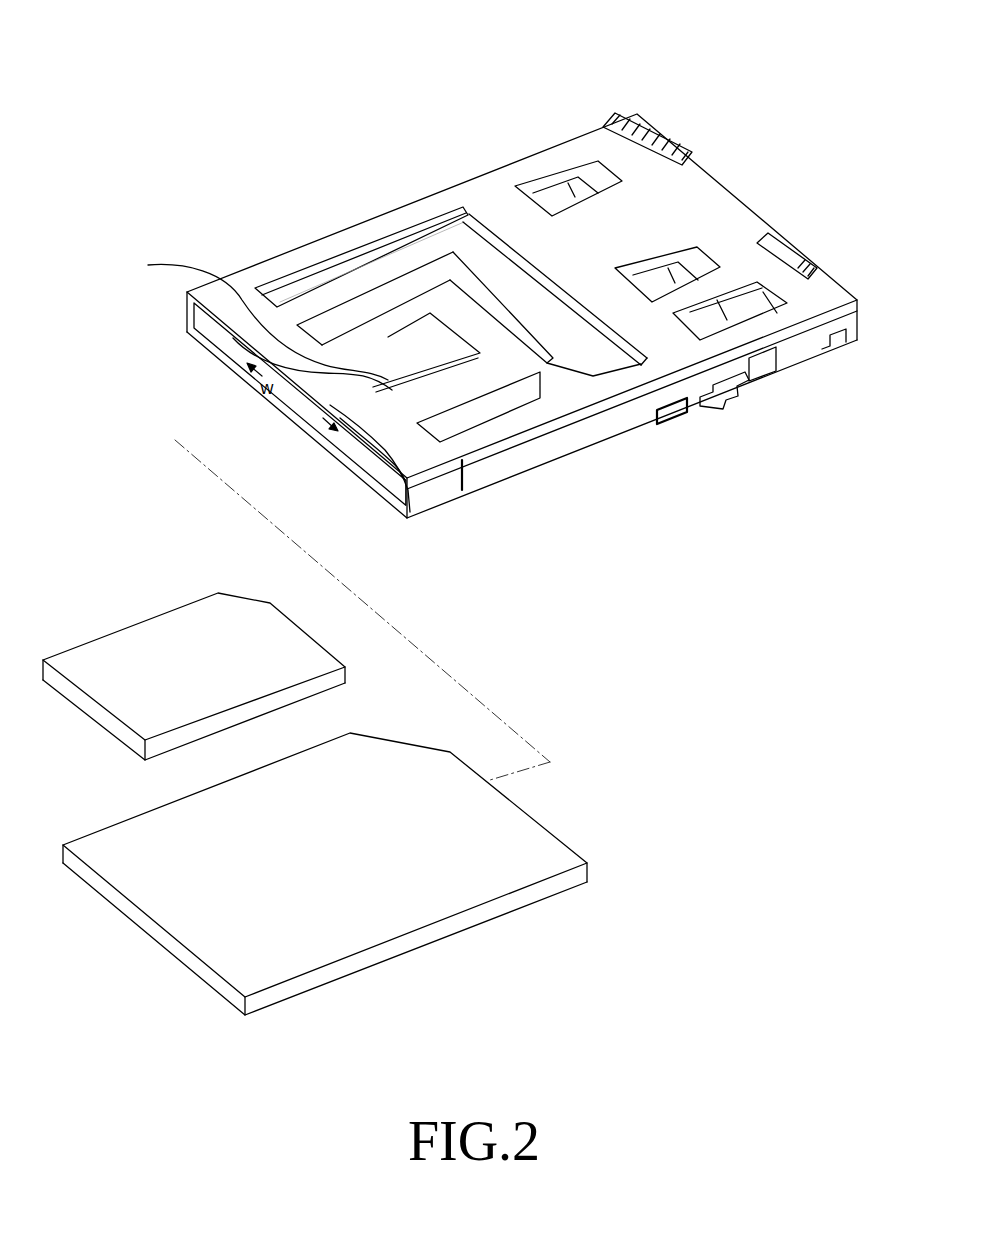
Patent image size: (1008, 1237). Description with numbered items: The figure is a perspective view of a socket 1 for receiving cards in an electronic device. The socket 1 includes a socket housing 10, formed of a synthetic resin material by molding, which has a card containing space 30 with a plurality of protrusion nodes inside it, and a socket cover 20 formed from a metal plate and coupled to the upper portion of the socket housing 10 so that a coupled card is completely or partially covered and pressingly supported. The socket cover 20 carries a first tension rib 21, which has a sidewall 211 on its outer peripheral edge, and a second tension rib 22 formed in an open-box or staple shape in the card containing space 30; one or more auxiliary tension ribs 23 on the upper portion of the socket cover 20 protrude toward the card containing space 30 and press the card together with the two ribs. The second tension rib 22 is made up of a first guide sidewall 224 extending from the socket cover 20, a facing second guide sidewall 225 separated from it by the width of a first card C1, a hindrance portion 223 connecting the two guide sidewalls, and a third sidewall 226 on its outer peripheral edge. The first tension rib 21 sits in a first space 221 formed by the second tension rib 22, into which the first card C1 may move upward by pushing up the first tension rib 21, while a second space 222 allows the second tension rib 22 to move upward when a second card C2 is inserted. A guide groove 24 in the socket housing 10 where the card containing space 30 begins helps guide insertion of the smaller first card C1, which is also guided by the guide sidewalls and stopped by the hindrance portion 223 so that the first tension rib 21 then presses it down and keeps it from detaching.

The socket 1 is at (442, 95).
The socket housing 10 is at (812, 345).
The socket cover 20 is at (716, 213).
The first tension rib 21 is at (251, 317).
The sidewall 211 is at (233, 338).
The second tension rib 22 is at (451, 335).
The first space 221 is at (483, 365).
The second space 222 is at (420, 295).
The hindrance portion 223 is at (490, 307).
The first guide sidewall 224 is at (363, 295).
The second guide sidewall 225 is at (446, 382).
The third sidewall 226 is at (538, 383).
The auxiliary tension ribs 23 is at (673, 262).
The guide groove 24 is at (432, 470).
The card containing space 30 is at (357, 468).
The first card C1 is at (208, 637).
The second card C2 is at (483, 843).